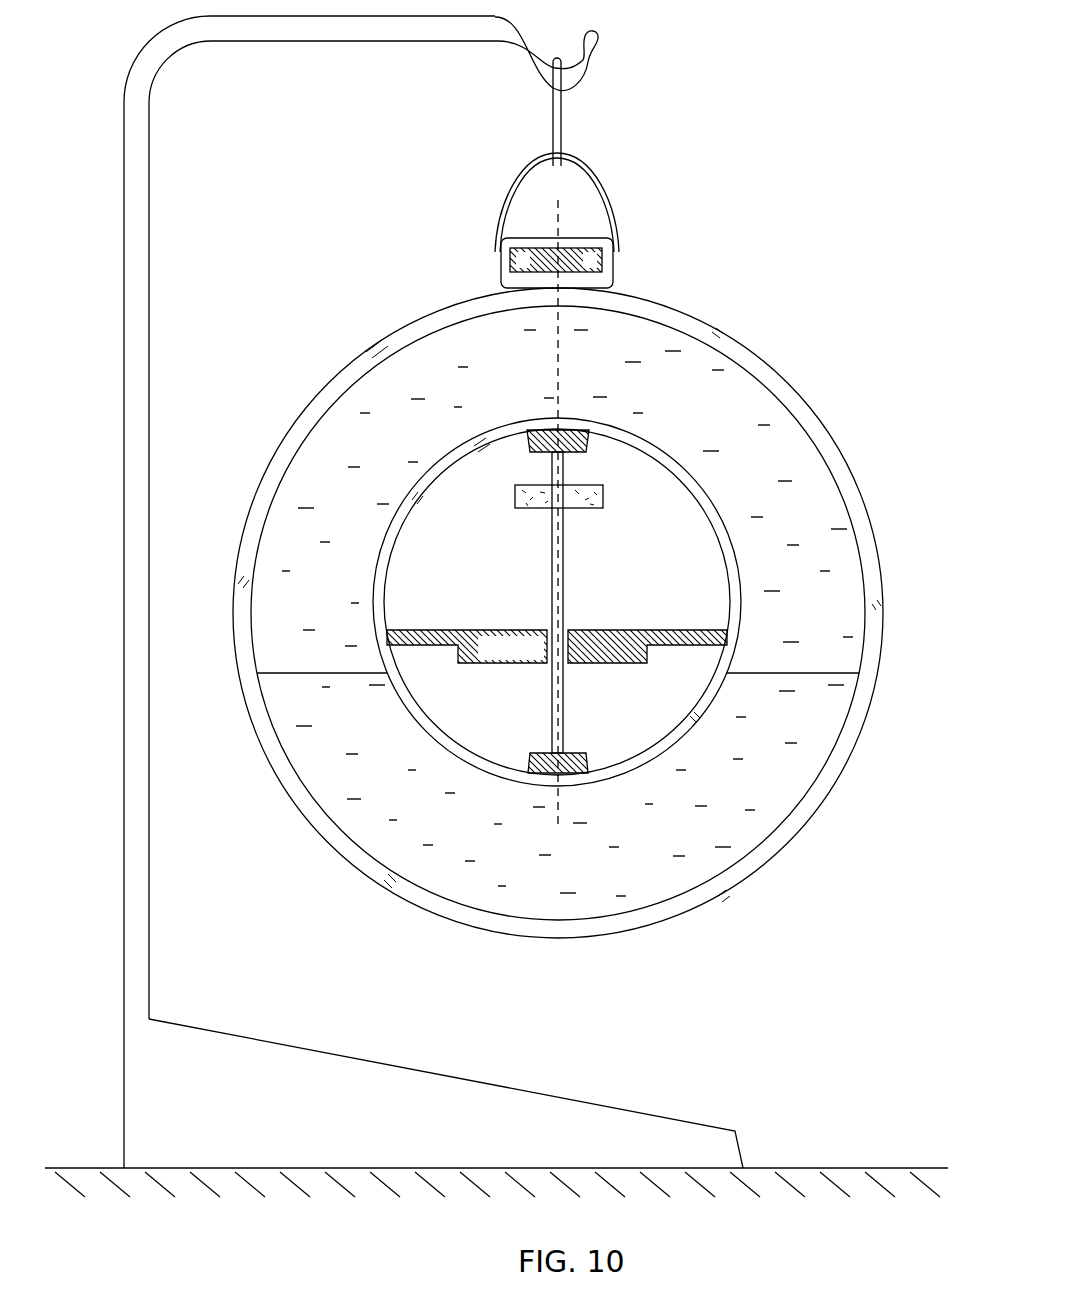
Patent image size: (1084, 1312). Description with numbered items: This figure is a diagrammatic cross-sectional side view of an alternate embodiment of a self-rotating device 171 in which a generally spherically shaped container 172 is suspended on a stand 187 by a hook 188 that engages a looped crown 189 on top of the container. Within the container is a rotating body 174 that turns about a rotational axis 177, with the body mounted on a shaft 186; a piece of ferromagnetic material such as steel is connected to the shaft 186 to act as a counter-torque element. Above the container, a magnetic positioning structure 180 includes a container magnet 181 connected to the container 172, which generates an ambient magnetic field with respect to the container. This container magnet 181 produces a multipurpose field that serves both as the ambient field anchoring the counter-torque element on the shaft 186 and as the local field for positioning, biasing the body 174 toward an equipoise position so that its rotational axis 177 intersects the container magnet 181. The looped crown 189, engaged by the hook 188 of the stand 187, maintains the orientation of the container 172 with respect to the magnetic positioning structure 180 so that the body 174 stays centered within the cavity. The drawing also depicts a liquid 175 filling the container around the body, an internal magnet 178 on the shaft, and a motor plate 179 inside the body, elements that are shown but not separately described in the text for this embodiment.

The self-rotating device 171 is at (840, 354).
The container 172 is at (875, 516).
The body 174 is at (698, 456).
The liquid 175 is at (318, 750).
The rotational axis 177 is at (558, 372).
The drum magnet 178 is at (582, 510).
The motor plate 179 is at (630, 630).
The magnetic positioning structure 180 is at (482, 260).
The container magnet 181 is at (613, 266).
The shaft 186 is at (552, 581).
The stand 187 is at (150, 934).
The hook 188 is at (600, 56).
The looped crown 189 is at (614, 206).